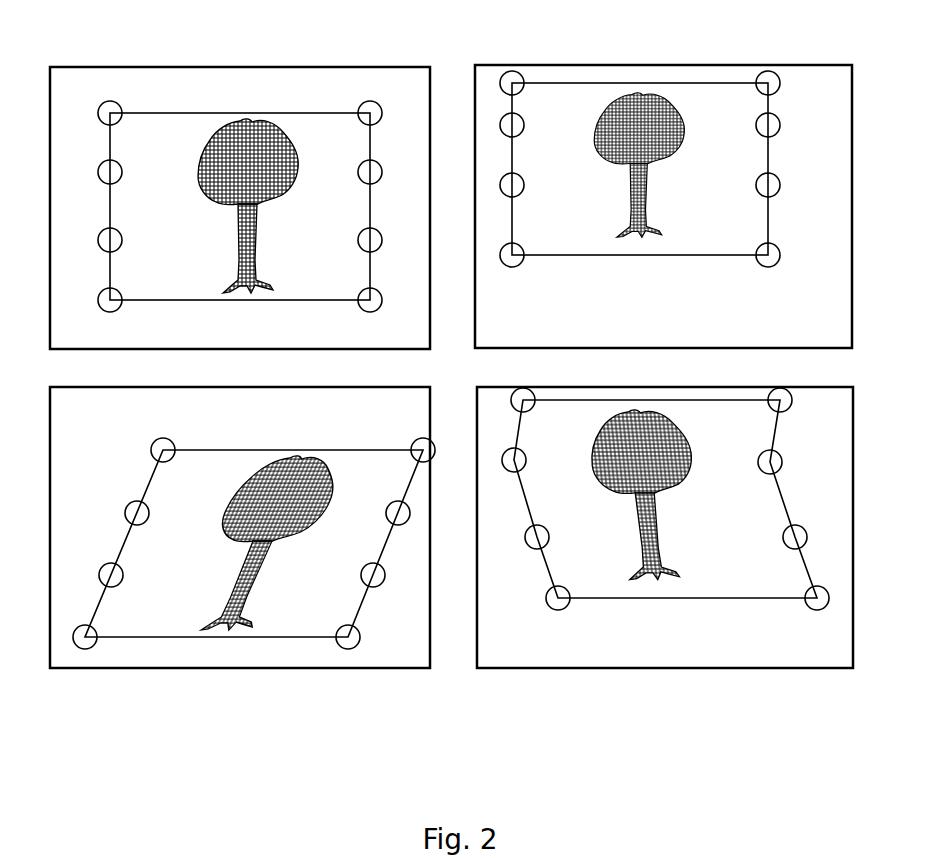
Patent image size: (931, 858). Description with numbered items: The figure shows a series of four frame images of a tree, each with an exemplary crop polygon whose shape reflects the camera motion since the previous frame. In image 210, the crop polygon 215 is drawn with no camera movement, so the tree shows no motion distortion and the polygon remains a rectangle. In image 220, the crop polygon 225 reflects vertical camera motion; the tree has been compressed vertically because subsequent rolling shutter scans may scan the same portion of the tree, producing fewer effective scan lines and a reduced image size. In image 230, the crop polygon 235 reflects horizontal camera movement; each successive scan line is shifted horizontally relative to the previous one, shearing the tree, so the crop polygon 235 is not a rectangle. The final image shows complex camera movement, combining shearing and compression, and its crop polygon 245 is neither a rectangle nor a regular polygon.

The image 210 is at (252, 378).
The crop polygon 215 is at (212, 97).
The image 220 is at (675, 378).
The crop polygon 225 is at (567, 77).
The image 230 is at (259, 701).
The crop polygon 235 is at (138, 475).
The crop polygon 245 is at (588, 607).